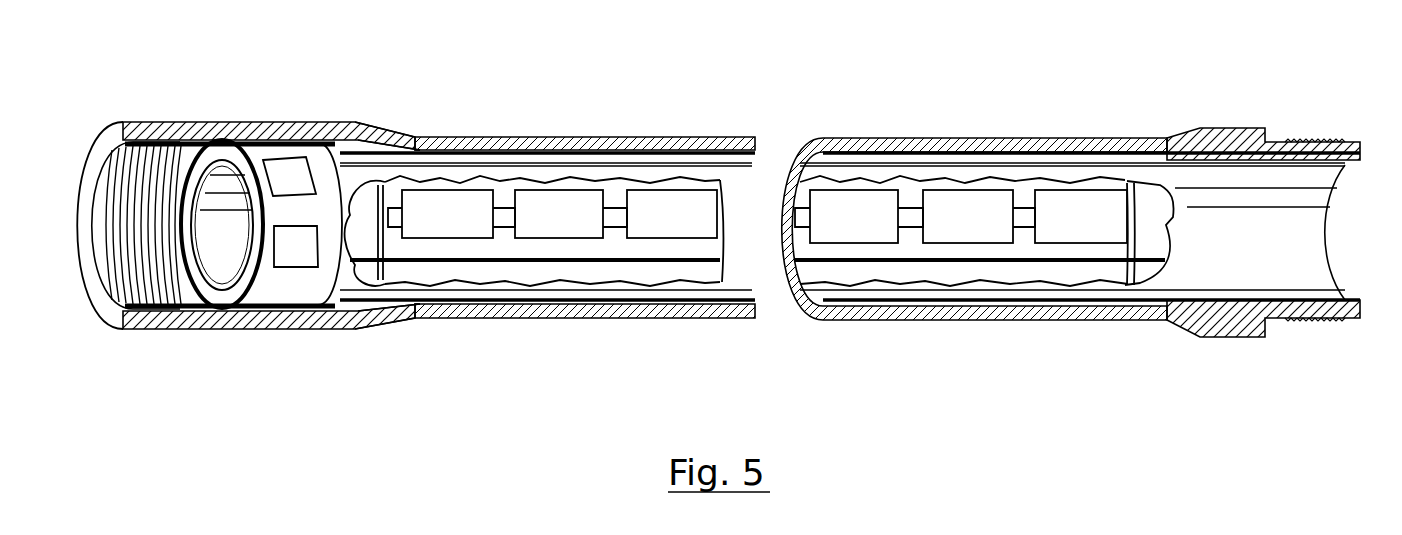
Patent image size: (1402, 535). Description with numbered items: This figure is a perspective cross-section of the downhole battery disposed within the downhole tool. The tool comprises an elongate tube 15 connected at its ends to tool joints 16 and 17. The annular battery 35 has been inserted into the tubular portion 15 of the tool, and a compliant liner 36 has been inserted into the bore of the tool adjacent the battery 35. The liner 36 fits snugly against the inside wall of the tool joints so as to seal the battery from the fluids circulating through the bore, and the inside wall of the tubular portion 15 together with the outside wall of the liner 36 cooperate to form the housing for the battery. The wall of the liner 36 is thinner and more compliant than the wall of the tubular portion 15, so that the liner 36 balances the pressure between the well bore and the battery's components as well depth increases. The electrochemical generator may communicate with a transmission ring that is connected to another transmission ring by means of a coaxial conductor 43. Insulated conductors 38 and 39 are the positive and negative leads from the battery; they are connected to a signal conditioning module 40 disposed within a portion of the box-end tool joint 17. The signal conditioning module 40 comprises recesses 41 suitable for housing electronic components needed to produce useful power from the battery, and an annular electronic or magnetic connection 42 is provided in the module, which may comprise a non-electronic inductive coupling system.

The elongate tube 15 is at (712, 138).
The tool joint 16 is at (1228, 128).
The box-end tool joint 17 is at (240, 122).
The battery 35 is at (920, 138).
The compliant liner 36 is at (557, 138).
The insulated conductor 38 is at (353, 124).
The insulated conductor 39 is at (410, 317).
The signal conditioning module 40 is at (267, 277).
The recesses 41 is at (295, 247).
The annular electronic or magnetic connection 42 is at (185, 122).
The coaxial conductor 43 is at (1075, 280).